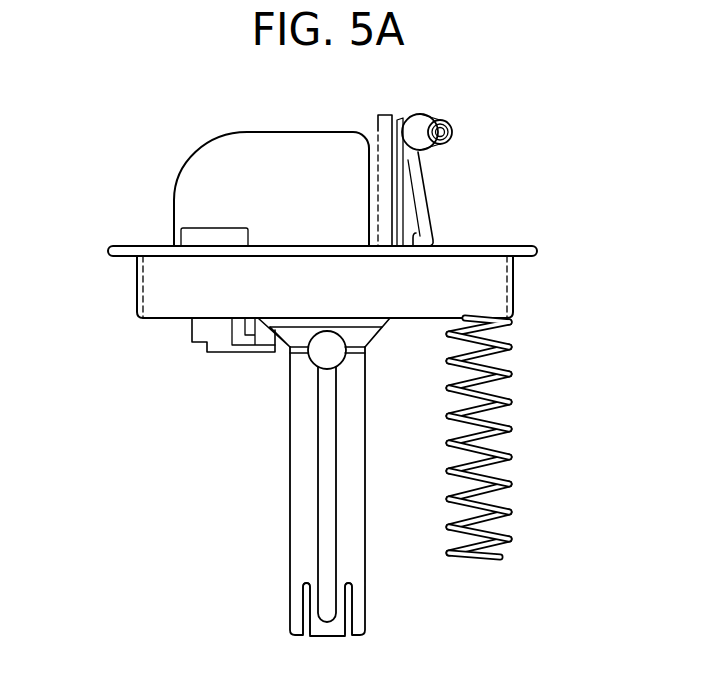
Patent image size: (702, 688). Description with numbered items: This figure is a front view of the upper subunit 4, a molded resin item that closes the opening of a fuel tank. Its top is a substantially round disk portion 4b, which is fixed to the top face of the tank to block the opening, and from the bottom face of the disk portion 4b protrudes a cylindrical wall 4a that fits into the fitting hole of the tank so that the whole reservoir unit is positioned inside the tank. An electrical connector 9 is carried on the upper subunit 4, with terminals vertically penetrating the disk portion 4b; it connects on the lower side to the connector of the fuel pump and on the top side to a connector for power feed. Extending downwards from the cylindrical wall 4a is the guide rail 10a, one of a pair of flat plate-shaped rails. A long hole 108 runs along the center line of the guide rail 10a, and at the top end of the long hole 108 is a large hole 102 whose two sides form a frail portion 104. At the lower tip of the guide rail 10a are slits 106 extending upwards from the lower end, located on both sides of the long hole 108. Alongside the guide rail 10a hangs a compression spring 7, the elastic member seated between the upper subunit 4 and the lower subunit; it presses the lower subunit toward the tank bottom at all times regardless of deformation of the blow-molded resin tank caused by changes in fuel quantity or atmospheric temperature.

The upper subunit 4 is at (461, 225).
The cylindrical wall 4a is at (135, 290).
The disk portion 4b is at (500, 240).
The compression spring 7 is at (510, 365).
The electrical connector 9 is at (222, 333).
The guide rail 10a is at (350, 502).
The large hole 102 is at (332, 348).
The frail portion 104 is at (352, 360).
The slits 106 is at (347, 605).
The long hole 108 is at (327, 515).